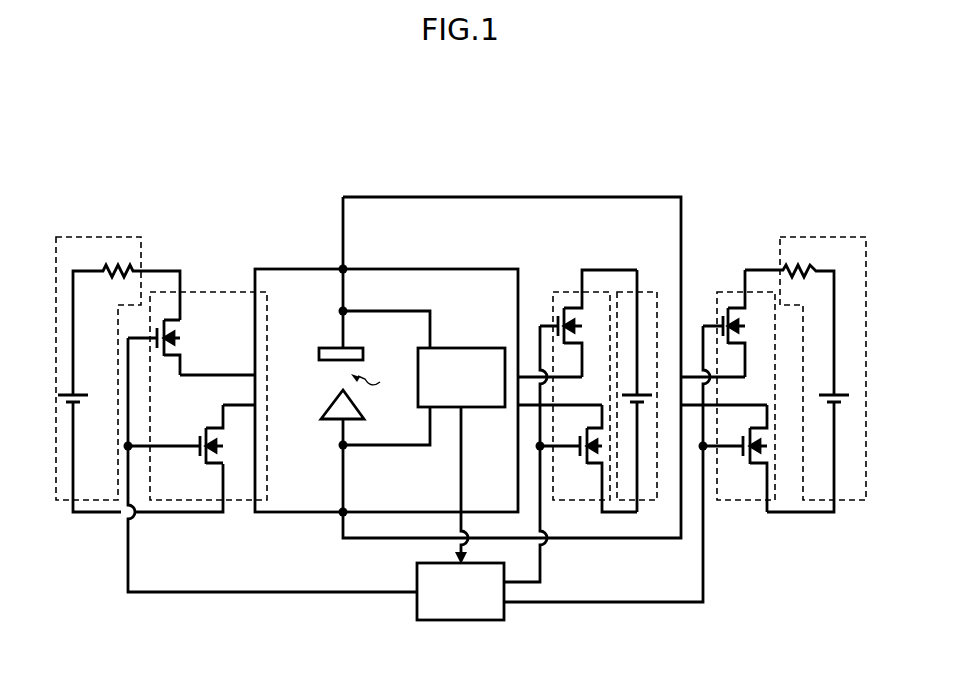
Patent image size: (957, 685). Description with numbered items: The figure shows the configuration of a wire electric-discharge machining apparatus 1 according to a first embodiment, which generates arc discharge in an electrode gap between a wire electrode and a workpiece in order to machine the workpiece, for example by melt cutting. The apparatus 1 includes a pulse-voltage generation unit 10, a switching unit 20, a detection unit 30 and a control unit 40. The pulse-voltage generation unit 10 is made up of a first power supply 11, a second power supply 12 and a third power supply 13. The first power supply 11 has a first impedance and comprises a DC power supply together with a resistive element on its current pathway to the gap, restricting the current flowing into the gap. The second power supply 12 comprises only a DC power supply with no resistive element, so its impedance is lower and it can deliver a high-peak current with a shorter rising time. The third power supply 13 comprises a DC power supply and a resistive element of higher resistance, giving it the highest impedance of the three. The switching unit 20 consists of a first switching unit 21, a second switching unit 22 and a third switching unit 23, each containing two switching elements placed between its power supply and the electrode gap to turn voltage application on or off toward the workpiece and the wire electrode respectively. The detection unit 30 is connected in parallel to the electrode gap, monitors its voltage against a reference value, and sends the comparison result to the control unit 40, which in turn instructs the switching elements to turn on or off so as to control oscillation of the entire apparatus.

The wire electric-discharge machining apparatus 1 is at (692, 147).
The pulse-voltage generation unit 10 is at (101, 173).
The first power supply 11 is at (94, 236).
The second power supply 12 is at (644, 291).
The third power supply 13 is at (811, 236).
The switching unit 20 is at (204, 557).
The first switching unit 21 is at (207, 502).
The second switching unit 22 is at (560, 291).
The third switching unit 23 is at (733, 502).
The detection unit 30 is at (476, 347).
The control unit 40 is at (485, 622).